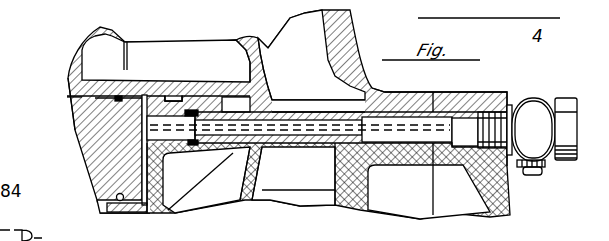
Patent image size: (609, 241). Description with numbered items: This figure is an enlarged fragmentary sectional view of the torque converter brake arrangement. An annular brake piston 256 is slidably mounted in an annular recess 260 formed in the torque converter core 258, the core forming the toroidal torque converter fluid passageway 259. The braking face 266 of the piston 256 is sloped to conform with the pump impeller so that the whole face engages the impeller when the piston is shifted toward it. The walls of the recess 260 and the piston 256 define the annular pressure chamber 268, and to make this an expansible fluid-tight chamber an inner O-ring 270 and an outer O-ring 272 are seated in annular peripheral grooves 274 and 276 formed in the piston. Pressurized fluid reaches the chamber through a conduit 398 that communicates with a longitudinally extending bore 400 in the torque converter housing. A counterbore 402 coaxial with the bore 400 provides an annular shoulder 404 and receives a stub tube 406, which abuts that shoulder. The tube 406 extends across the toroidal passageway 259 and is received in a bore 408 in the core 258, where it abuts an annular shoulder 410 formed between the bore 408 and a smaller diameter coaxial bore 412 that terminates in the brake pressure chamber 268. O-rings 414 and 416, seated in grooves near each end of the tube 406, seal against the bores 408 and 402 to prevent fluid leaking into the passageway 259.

The annular brake piston 256 is at (82, 108).
The torque converter core 258 is at (176, 72).
The toroidal torque converter fluid passageway 259 is at (287, 69).
The annular recess 260 is at (67, 97).
The braking face 266 is at (76, 138).
The annular pressure chamber 268 is at (148, 207).
The inner annular O-ring 270 is at (122, 97).
The outer annular O-ring 272 is at (117, 207).
The annular peripheral groove 274 is at (118, 149).
The annular peripheral groove 276 is at (114, 196).
The conduit 398 is at (536, 176).
The longitudinally extending bore 400 is at (432, 93).
The counterbore 402 is at (366, 128).
The annular shoulder 404 is at (382, 92).
The stub tube 406 is at (278, 147).
The bore 408 is at (268, 100).
The annular shoulder 410 is at (178, 98).
The smaller diameter bore 412 is at (143, 125).
The O-ring 414 is at (208, 157).
The O-ring 416 is at (371, 168).